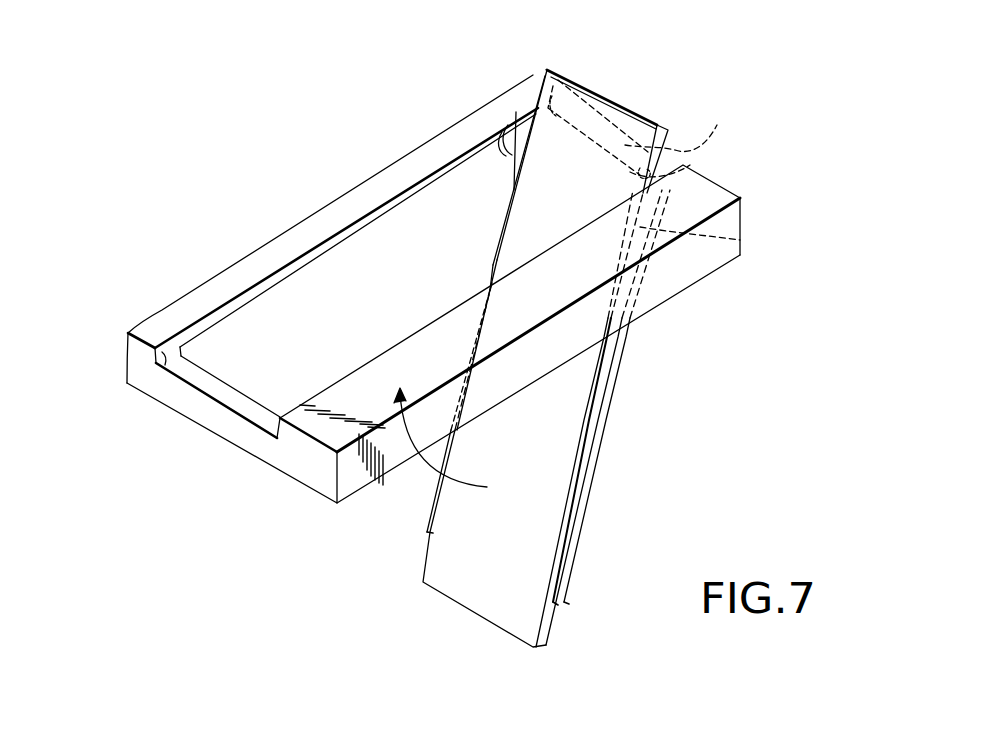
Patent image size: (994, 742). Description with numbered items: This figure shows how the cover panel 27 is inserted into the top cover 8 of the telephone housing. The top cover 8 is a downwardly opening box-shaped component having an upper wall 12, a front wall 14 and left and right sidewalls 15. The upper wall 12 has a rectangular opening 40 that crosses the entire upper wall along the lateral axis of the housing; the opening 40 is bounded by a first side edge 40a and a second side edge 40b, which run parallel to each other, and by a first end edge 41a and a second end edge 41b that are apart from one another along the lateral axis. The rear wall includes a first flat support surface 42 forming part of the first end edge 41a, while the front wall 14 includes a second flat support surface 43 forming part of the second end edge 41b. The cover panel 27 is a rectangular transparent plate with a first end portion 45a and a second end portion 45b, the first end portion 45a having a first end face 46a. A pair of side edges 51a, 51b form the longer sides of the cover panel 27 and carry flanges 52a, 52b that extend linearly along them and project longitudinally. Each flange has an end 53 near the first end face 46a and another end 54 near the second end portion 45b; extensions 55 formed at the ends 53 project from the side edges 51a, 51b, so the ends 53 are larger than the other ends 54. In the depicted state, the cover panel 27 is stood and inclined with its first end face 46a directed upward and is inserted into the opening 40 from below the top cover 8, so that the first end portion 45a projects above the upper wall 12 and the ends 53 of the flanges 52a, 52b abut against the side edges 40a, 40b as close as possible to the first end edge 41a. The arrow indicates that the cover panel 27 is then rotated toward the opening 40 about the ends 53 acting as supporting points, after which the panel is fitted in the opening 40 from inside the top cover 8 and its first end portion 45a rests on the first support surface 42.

The top cover 8 is at (742, 212).
The upper wall 12 is at (327, 221).
The front wall 14 is at (246, 437).
The left/right sidewalls 15 is at (703, 258).
The cover panel 27 is at (463, 507).
The opening 40 is at (358, 230).
The first side edge 40a is at (400, 338).
The second side edge 40b is at (433, 167).
The first end edge 41a is at (558, 78).
The second end edge 41b is at (127, 371).
The first flat support surface 42 is at (679, 142).
The second flat support surface 43 is at (203, 387).
The first end portion 45a is at (597, 117).
The second end portion 45b is at (483, 593).
The first end face 46a is at (630, 103).
The side edge 51a is at (567, 513).
The side edge 51b is at (457, 450).
The flange 52a is at (590, 465).
The flange 52b is at (508, 215).
The end of flange 53 is at (516, 112).
The other end of flange 54 is at (429, 533).
The extension 55 is at (502, 132).